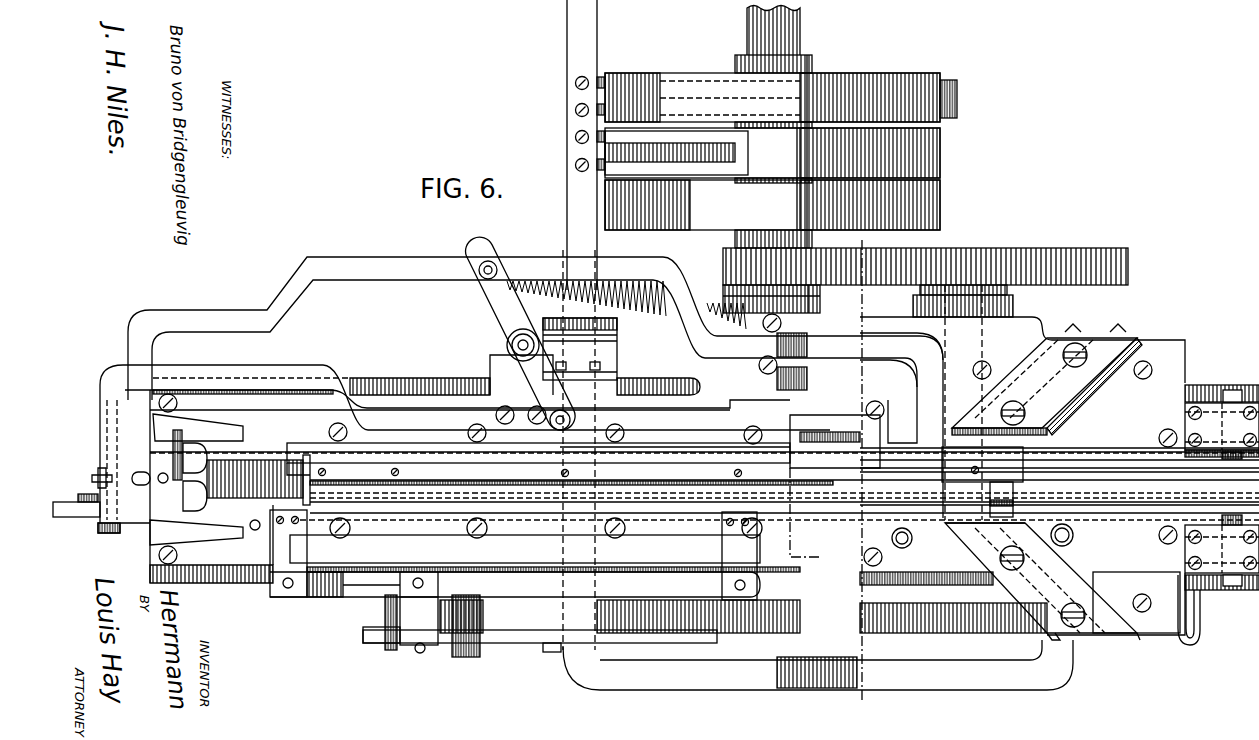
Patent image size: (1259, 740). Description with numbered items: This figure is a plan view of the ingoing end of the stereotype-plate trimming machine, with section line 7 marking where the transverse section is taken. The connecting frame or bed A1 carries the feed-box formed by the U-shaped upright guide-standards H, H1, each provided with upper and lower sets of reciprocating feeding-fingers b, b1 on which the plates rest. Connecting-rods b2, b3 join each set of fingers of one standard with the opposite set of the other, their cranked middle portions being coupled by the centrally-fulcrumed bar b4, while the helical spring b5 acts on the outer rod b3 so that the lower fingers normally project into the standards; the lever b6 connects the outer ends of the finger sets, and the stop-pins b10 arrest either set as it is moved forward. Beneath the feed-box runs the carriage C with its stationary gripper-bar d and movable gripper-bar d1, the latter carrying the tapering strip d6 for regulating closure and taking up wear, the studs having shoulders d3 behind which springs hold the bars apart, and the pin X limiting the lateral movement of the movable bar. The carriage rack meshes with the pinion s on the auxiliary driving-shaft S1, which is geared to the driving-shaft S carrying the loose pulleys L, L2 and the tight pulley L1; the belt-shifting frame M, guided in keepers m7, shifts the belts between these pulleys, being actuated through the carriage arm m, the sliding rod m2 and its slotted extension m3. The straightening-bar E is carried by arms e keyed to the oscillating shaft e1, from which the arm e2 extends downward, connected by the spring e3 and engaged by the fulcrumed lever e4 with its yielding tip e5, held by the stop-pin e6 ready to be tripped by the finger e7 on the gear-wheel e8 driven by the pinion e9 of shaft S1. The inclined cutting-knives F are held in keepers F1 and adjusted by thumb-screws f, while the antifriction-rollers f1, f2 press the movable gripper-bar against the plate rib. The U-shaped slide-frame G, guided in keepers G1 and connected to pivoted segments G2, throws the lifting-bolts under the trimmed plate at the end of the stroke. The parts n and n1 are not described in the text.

The loose pulley L2 is at (915, 76).
The stub shaft n1 is at (957, 99).
The tight pulley L1 is at (942, 160).
The recess n is at (748, 158).
The loose pulley L is at (942, 207).
The driving-shaft S is at (735, 240).
The auxiliary driving-shaft S1 is at (1008, 296).
The section line 7 is at (772, 474).
The connecting-rod b3 is at (395, 262).
The connecting-rod b2 is at (305, 368).
The connecting frame or bed A1 is at (1222, 598).
The centrally-fulcrumed bar b4 is at (490, 322).
The keepers m7 is at (618, 352).
The helical spring b5 is at (651, 300).
The upright guide-standard H is at (215, 430).
The upright guide-standard H1 is at (830, 425).
The feeding-fingers b1 is at (210, 458).
The stationary gripper-bar d is at (300, 442).
The shoulder d3 is at (385, 487).
The movable gripper-bar d1 is at (432, 505).
The straightening-bar E is at (525, 526).
The arms e is at (275, 565).
The oscillating shaft e1 is at (365, 590).
The arm e2 is at (405, 610).
The stop-pin e6 is at (380, 628).
The fulcrumed lever e4 is at (388, 650).
The helical spring e3 is at (422, 655).
The spring-actuated tip e5 is at (556, 652).
The projecting finger e7 is at (660, 638).
The gear-wheel e8 is at (828, 657).
The pinion e9 is at (965, 620).
The belt-shifting frame M is at (950, 685).
The keepers F1 is at (1138, 340).
The pinion s is at (1092, 340).
The thumb-screws f is at (1032, 405).
The antifriction-roller f1 is at (912, 542).
The antifriction-roller f2 is at (1075, 535).
The cutting-knives F is at (1040, 433).
The tapering longitudinal strip d6 is at (1017, 513).
The carriage C is at (1059, 476).
The keepers G1 is at (1185, 426).
The slide-frame G is at (1176, 496).
The pivoted segments G2 is at (1232, 460).
The slotted extension m3 is at (1193, 646).
The feeding-fingers b is at (185, 486).
The lever b6 is at (95, 478).
The arm m is at (85, 494).
The sliding rod m2 is at (76, 513).
The stop-pin b10 is at (160, 483).
The pin X is at (255, 530).